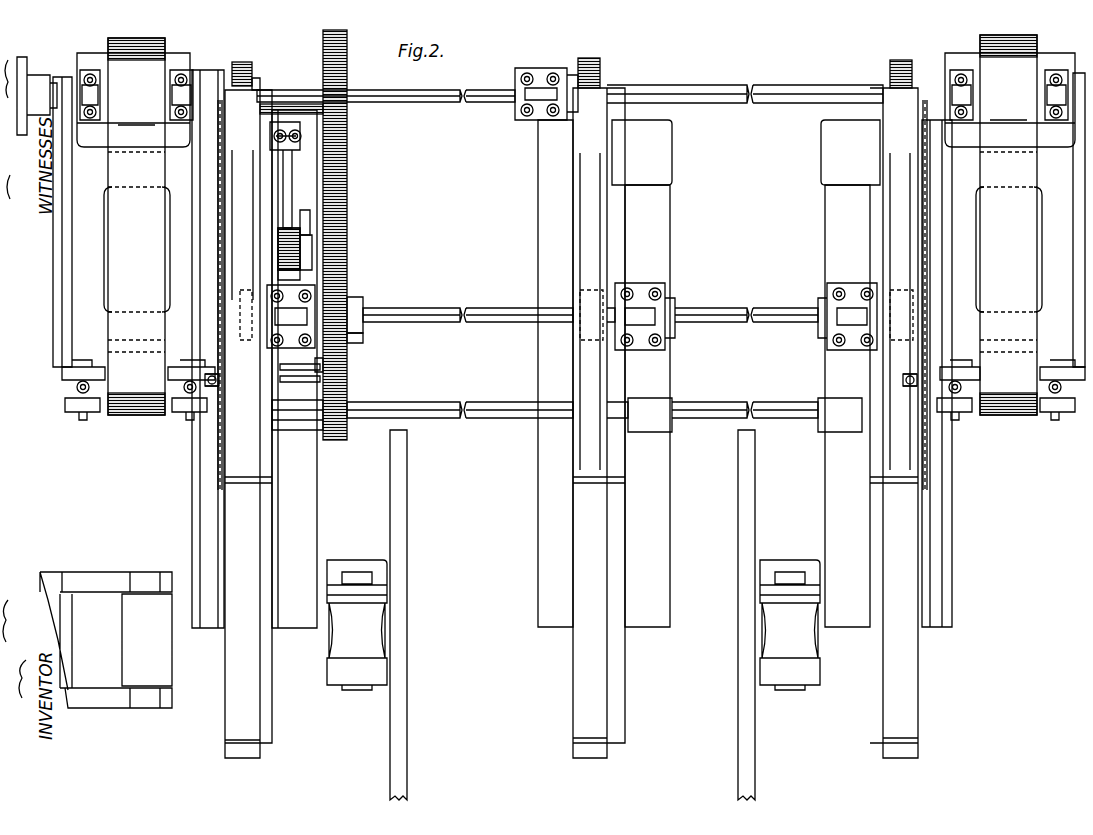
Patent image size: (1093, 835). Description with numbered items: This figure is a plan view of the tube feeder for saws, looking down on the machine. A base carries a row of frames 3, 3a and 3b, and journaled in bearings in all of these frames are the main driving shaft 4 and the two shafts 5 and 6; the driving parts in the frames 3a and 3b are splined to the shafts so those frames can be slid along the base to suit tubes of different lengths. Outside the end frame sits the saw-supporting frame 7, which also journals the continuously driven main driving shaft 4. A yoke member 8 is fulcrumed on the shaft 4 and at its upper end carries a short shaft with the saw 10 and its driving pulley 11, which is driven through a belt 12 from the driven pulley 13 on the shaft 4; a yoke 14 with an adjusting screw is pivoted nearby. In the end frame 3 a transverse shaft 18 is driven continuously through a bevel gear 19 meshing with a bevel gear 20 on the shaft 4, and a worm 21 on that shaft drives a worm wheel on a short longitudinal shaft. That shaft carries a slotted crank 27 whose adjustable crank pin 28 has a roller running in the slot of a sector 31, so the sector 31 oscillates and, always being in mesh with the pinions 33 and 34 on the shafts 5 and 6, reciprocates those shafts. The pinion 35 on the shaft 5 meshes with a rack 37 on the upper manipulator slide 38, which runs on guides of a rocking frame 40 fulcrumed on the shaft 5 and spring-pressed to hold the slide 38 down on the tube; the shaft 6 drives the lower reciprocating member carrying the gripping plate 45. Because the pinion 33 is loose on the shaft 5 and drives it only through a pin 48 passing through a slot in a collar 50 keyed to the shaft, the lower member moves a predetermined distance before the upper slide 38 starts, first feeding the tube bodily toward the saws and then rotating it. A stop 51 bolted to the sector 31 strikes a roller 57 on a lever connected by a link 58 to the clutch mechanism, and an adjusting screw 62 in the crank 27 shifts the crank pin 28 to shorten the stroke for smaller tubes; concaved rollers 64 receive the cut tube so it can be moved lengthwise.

The frame 3 is at (576, 369).
The frame 3a is at (645, 334).
The frame 3b is at (847, 335).
The main driving shaft 4 is at (50, 92).
The shaft 5 is at (412, 316).
The shaft 6 is at (604, 407).
The saw-supporting frame 7 is at (88, 62).
The yoke member 8 is at (72, 290).
The saw 10 is at (218, 432).
The driving pulley 11 is at (108, 418).
The belt 12 is at (573, 225).
The driven pulley 13 is at (172, 66).
The yoke 14 is at (62, 358).
The transverse shaft 18 is at (288, 198).
The bevel gear 19 is at (290, 106).
The bevel gear 20 is at (258, 82).
The worm 21 is at (298, 238).
The slotted crank 27 is at (301, 276).
The crank pin 28 is at (340, 223).
The sector 31 is at (347, 182).
The pinion 33 is at (340, 298).
The pinion 34 is at (340, 440).
The pinion 35 is at (247, 290).
The rack 37 is at (244, 62).
The upper manipulator slide 38 is at (571, 495).
The rocking frame 40 is at (892, 225).
The gripping plate 45 is at (232, 700).
The pin 48 is at (363, 312).
The collar 50 is at (360, 333).
The stop 51 is at (330, 368).
The roller 57 is at (300, 387).
The link 58 is at (300, 357).
The adjusting screw 62 is at (340, 217).
The concaved roller 64 is at (573, 625).